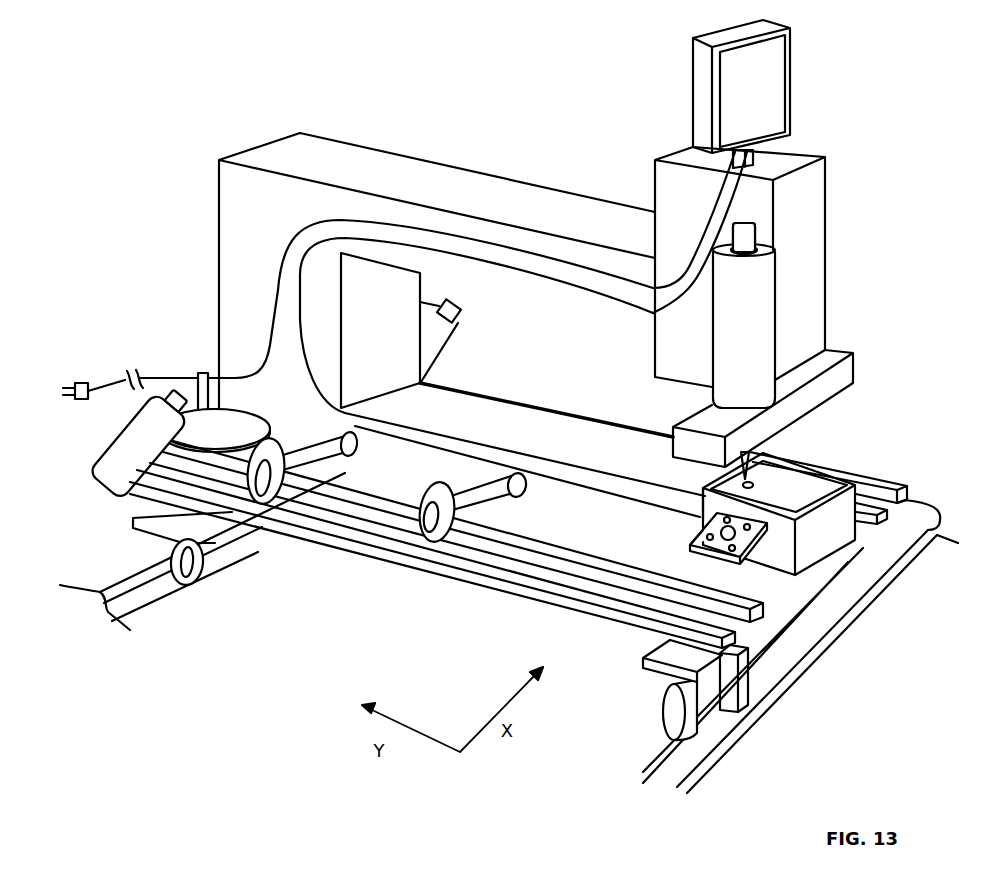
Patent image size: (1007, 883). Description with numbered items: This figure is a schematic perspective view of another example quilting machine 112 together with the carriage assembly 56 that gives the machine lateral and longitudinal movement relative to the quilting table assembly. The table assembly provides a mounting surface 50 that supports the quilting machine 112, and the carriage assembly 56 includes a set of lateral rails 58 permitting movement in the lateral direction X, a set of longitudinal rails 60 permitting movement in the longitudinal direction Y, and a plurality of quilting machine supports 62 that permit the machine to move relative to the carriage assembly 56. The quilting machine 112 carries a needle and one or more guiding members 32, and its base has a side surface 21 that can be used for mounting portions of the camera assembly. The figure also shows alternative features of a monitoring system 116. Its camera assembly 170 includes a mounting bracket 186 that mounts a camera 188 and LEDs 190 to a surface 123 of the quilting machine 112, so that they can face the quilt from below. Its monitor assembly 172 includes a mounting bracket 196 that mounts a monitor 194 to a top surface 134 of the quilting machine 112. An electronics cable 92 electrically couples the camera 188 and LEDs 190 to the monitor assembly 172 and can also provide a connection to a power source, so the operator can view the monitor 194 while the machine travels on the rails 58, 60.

The quilting machine 112 is at (219, 198).
The monitoring system 116 is at (680, 86).
The monitor assembly 172 is at (690, 88).
The monitor 194 is at (707, 60).
The top surface 134 is at (805, 148).
The mounting bracket 196 is at (757, 153).
The guiding member 32 is at (113, 495).
The quilting machine supports 62 is at (293, 450).
The lateral rails 58 is at (443, 583).
The longitudinal rails 60 is at (137, 613).
The carriage assembly 56 is at (898, 463).
The electronics cable 92 is at (427, 440).
The second side surface 21 is at (424, 472).
The surface 123 is at (542, 517).
The LEDs 190 is at (703, 519).
The camera 188 is at (700, 527).
The camera assembly 170 is at (690, 547).
The mounting bracket 186 is at (768, 535).
The mounting surface 50 is at (312, 623).